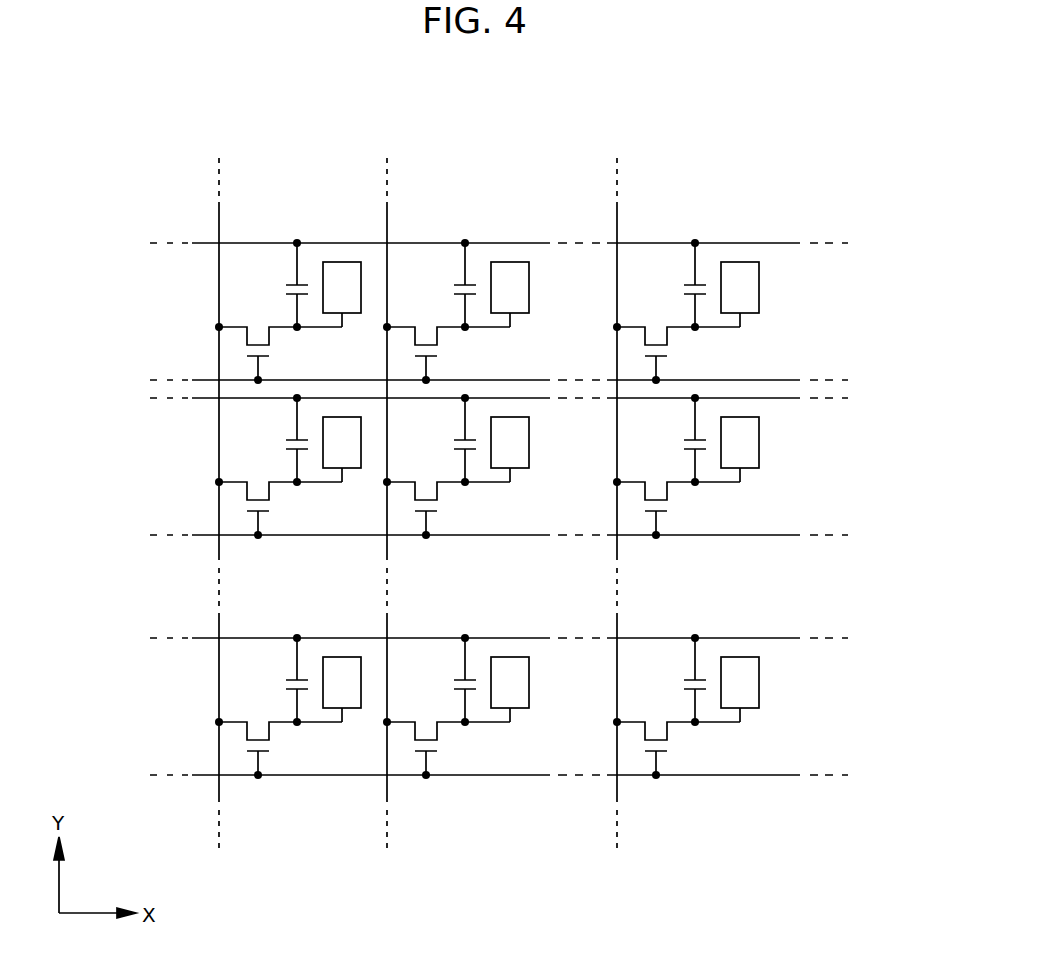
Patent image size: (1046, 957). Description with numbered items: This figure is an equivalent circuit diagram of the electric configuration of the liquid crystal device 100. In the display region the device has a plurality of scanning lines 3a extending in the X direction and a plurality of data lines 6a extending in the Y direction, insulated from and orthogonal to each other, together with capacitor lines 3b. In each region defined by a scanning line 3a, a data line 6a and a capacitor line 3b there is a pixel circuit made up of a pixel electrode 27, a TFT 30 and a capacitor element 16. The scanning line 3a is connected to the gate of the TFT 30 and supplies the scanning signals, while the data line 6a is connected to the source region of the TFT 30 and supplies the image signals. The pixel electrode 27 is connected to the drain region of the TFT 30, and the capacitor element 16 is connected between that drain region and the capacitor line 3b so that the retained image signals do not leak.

The liquid crystal device 100 is at (733, 159).
The data line 6a is at (219, 215).
The scanning line 3a is at (787, 380).
The capacitor line 3b is at (790, 243).
The capacitor element 16 is at (284, 290).
The pixel electrode 27 is at (739, 283).
The TFT 30 is at (272, 349).